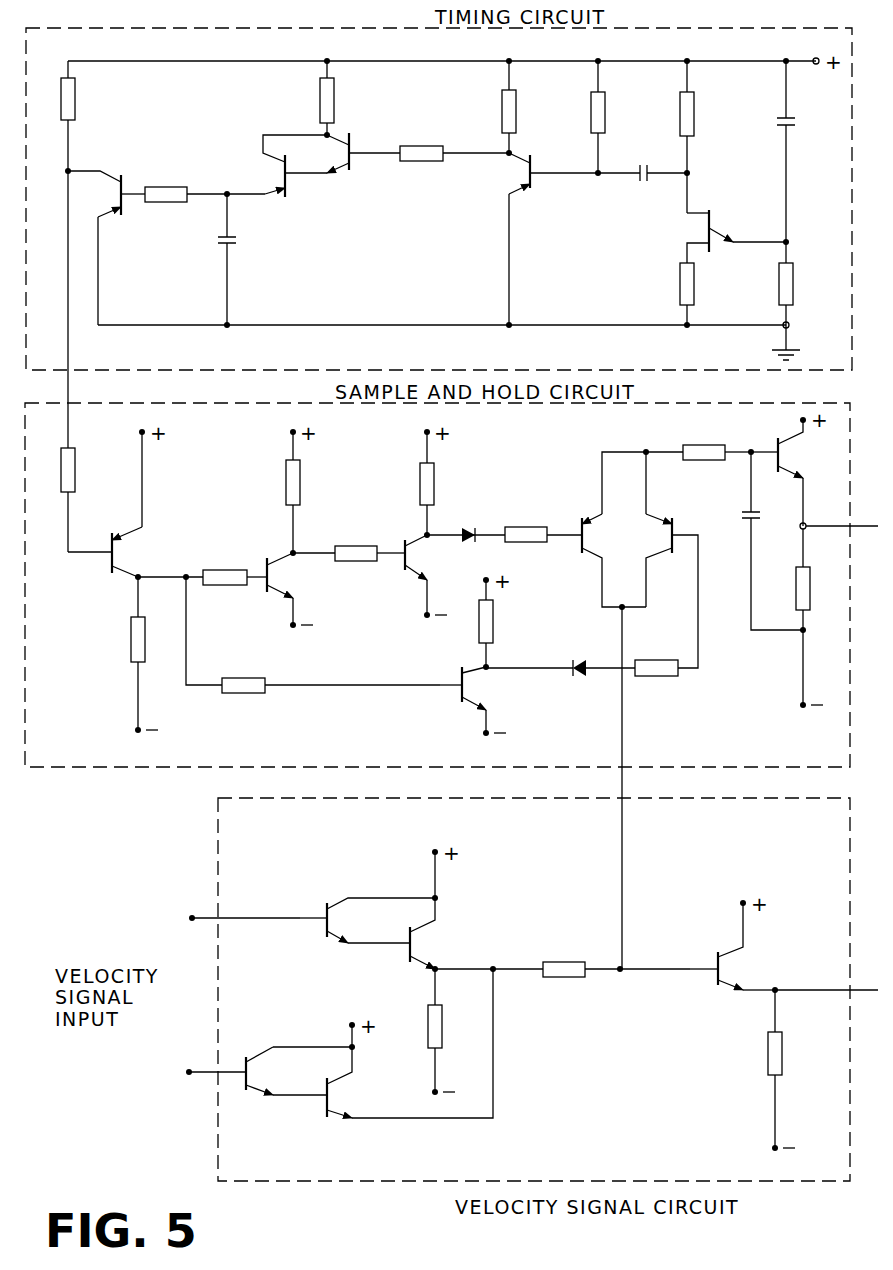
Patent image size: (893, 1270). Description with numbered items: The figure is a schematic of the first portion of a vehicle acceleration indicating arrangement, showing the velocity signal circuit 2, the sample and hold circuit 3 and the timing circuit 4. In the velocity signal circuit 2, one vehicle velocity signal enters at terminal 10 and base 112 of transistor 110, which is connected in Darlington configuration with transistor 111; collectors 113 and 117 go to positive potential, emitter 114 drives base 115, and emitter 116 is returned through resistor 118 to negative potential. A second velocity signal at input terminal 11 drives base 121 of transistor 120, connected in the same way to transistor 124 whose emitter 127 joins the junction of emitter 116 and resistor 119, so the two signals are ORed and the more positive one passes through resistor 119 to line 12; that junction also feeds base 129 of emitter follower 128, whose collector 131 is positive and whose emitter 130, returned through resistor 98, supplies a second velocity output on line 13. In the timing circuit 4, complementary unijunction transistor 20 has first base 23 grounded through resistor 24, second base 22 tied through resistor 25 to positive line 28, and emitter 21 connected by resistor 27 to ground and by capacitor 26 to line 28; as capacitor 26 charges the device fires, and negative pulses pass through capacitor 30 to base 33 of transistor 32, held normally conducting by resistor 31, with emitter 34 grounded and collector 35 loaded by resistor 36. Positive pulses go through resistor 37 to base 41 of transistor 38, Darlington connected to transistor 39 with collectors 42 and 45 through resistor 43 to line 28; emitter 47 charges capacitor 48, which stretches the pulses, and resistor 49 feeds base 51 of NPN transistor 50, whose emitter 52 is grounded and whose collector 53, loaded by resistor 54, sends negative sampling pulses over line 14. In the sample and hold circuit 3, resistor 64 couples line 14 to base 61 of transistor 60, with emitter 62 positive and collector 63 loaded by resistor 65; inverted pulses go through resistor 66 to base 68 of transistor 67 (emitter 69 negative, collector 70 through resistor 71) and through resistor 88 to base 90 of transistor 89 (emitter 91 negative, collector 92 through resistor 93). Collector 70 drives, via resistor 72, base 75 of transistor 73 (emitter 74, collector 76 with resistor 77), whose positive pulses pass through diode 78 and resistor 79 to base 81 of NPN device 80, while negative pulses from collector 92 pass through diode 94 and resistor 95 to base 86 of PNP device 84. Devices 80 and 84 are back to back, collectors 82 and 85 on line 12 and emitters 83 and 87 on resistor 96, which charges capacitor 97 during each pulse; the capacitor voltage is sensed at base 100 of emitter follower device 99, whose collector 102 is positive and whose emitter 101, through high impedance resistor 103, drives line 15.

The velocity signal circuit 2 is at (403, 1180).
The sample and hold circuit 3 is at (268, 402).
The timing circuit 4 is at (354, 28).
The terminal 10 is at (190, 916).
The second velocity signal input terminal 11 is at (188, 1084).
The line 12 is at (622, 792).
The line 13 is at (859, 992).
The line 14 is at (69, 391).
The line 15 is at (860, 520).
The complementary unijunction transistor 20 is at (690, 231).
The emitter 21 is at (719, 229).
The second base 22 is at (695, 212).
The first base 23 is at (703, 243).
The resistor 24 is at (680, 285).
The resistor 25 is at (701, 107).
The capacitor 26 is at (794, 123).
The resistor 27 is at (793, 290).
The line 28 is at (736, 63).
The capacitor 30 is at (638, 165).
The resistor 31 is at (605, 111).
The transistor 32 is at (514, 171).
The base 33 is at (536, 173).
The emitter 34 is at (526, 186).
The collector 35 is at (515, 156).
The resistor 36 is at (516, 108).
The resistor 37 is at (432, 148).
The transistor 38 is at (333, 151).
The transistor 39 is at (269, 173).
The base 41 is at (353, 144).
The collector 42 is at (338, 132).
The resistor 43 is at (334, 96).
The collector 45 is at (274, 148).
The emitter 47 is at (285, 194).
The capacitor 48 is at (243, 239).
The resistor 49 is at (169, 187).
The NPN transistor 50 is at (103, 195).
The base 51 is at (124, 196).
The emitter 52 is at (105, 212).
The collector 53 is at (107, 177).
The resistor 54 is at (76, 98).
The transistor 60 is at (131, 553).
The base 61 is at (98, 548).
The emitter 62 is at (128, 533).
The collector 63 is at (127, 572).
The resistor 64 is at (75, 473).
The resistor 65 is at (131, 640).
The resistor 66 is at (207, 570).
The transistor 67 is at (283, 575).
The base 68 is at (262, 591).
The emitter 69 is at (279, 592).
The collector 70 is at (281, 562).
The resistor 71 is at (286, 473).
The resistor 72 is at (340, 553).
The transistor 73 is at (421, 555).
The emitter 74 is at (414, 572).
The base 75 is at (398, 568).
The collector 76 is at (417, 534).
The resistor 77 is at (420, 465).
The diode 78 is at (468, 534).
The resistor 79 is at (530, 526).
The NPN device 80 is at (599, 535).
The base 81 is at (573, 546).
The collector 82 is at (587, 551).
The emitter 83 is at (596, 517).
The PNP device 84 is at (655, 535).
The collector 85 is at (669, 551).
The base 86 is at (672, 533).
The emitter 87 is at (671, 518).
The resistor 88 is at (248, 681).
The transistor 89 is at (479, 684).
The base 90 is at (460, 674).
The emitter 91 is at (470, 700).
The collector 92 is at (477, 675).
The resistor 93 is at (493, 628).
The diode 94 is at (580, 662).
The resistor 95 is at (652, 660).
The resistor 96 is at (710, 449).
The capacitor 97 is at (748, 519).
The resistor 98 is at (783, 1062).
The device 99 is at (795, 455).
The base 100 is at (774, 451).
The emitter 101 is at (791, 470).
The collector 102 is at (788, 442).
The high impedance resistor 103 is at (796, 586).
The transistor 110 is at (346, 920).
The transistor 111 is at (429, 944).
The base 112 is at (318, 913).
The collector 113 is at (340, 899).
The emitter 114 is at (336, 938).
The base 115 is at (404, 949).
The emitter 116 is at (422, 964).
The collector 117 is at (422, 927).
The resistor 118 is at (442, 1028).
The resistor 119 is at (563, 960).
The transistor 120 is at (266, 1068).
The base 121 is at (239, 1088).
The transistor 124 is at (349, 1082).
The emitter 127 is at (333, 1113).
The emitter follower 128 is at (737, 968).
The base 129 is at (709, 954).
The emitter 130 is at (728, 983).
The collector 131 is at (728, 951).